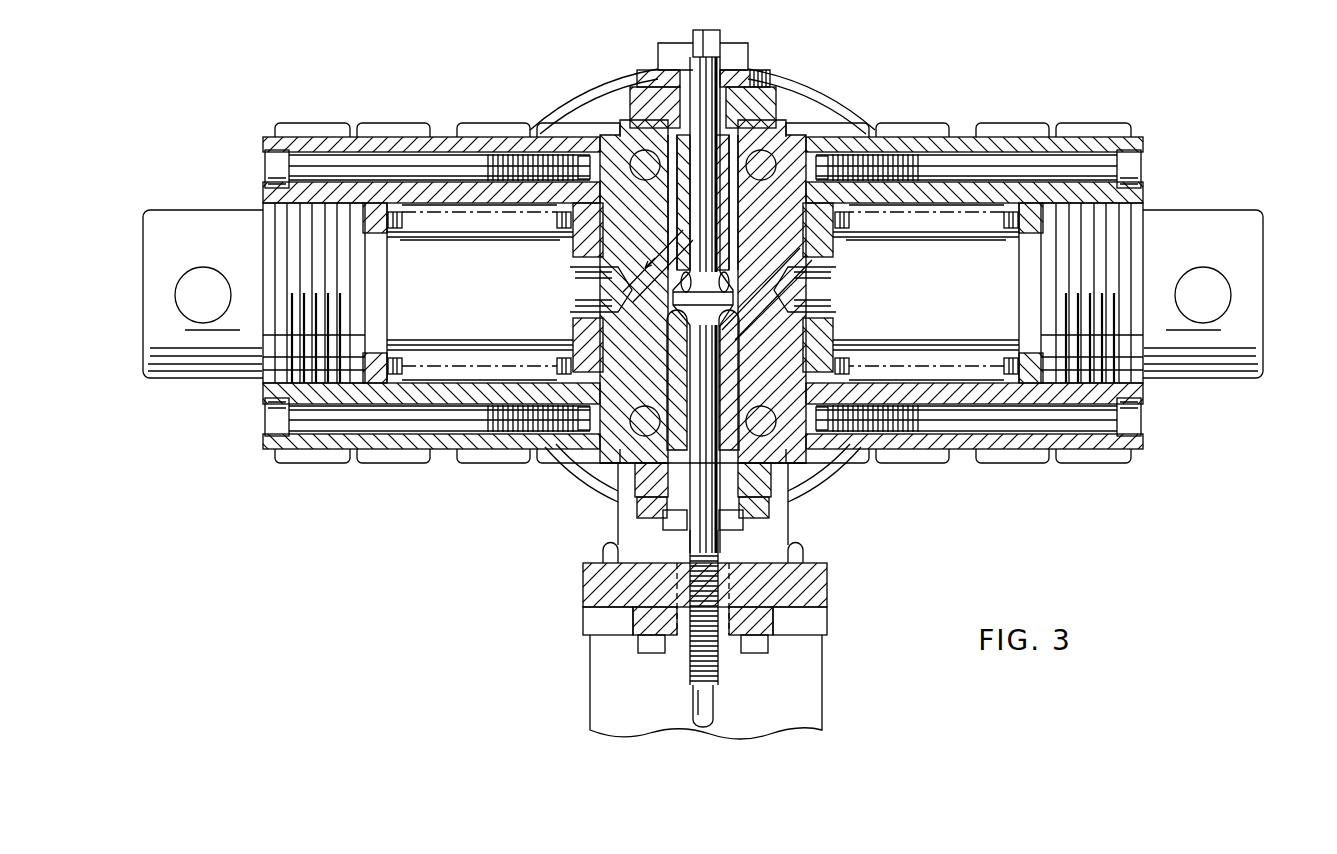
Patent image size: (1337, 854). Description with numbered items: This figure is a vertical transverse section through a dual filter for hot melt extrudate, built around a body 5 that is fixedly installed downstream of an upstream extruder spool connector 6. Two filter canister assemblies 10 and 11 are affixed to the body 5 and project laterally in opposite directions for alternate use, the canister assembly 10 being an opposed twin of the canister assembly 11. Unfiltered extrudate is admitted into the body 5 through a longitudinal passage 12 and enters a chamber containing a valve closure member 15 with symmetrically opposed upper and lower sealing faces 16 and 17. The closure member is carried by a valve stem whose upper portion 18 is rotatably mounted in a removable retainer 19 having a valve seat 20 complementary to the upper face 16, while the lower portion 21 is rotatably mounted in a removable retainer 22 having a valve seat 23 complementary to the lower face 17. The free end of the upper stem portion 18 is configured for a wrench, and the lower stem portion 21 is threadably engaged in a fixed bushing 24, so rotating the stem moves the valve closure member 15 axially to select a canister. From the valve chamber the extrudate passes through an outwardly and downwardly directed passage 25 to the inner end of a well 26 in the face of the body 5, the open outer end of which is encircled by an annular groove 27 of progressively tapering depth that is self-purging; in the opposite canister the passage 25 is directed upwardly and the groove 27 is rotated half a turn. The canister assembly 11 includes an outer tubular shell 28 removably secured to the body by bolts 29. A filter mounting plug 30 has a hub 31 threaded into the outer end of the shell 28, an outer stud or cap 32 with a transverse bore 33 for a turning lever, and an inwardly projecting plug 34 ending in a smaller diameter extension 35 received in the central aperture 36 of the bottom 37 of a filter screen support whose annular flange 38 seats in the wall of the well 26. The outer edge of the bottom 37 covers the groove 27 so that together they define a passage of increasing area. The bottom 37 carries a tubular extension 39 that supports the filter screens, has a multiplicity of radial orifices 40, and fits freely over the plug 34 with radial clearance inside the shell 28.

The body 5 is at (626, 118).
The upstream extruder spool connector 6 is at (563, 108).
The filter canister assembly 10 is at (972, 132).
The filter canister assembly 11 is at (442, 132).
The longitudinal passage 12 is at (777, 291).
The valve closure member 15 is at (673, 308).
The upper sealing face 16 is at (740, 310).
The lower sealing face 17 is at (703, 305).
The upper stem portion 18 is at (712, 58).
The removable retainer 19 is at (640, 93).
The valve seat 20 is at (740, 277).
The lower stem portion 21 is at (697, 543).
The removable retainer 22 is at (770, 490).
The valve seat 23 is at (668, 332).
The fixed bushing 24 is at (732, 562).
The passage 25 is at (765, 358).
The well 26 is at (630, 305).
The annular groove 27 is at (607, 217).
The outer tubular shell 28 is at (341, 143).
The bolts 29 is at (268, 168).
The filter mounting plug 30 is at (258, 208).
The hub 31 is at (262, 357).
The outer stud or cap 32 is at (176, 376).
The transverse bore 33 is at (182, 288).
The plug 34 is at (470, 311).
The extension 35 is at (583, 281).
The central aperture 36 is at (582, 305).
The bottom 37 is at (580, 327).
The annular flange 38 is at (577, 261).
The tubular extension 39 is at (512, 356).
The radial orifices 40 is at (397, 231).